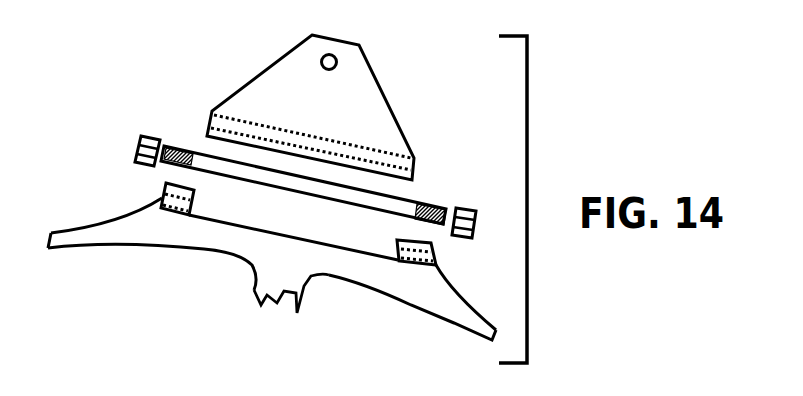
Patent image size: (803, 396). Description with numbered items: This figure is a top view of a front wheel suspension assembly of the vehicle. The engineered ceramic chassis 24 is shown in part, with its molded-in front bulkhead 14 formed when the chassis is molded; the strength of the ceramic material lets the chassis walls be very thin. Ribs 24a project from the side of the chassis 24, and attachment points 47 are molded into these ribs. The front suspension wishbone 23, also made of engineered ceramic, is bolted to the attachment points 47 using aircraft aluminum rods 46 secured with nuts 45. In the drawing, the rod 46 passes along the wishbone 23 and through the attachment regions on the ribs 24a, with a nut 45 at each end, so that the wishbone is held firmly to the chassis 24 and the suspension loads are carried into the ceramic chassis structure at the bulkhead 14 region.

The front bulkhead 14 is at (297, 283).
The front suspension wishbone 23 is at (383, 97).
The chassis 24 is at (127, 223).
The ribs 24a is at (190, 188).
The nuts 45 is at (137, 160).
The aircraft aluminum rods 46 is at (193, 150).
The attachment points 47 is at (432, 262).